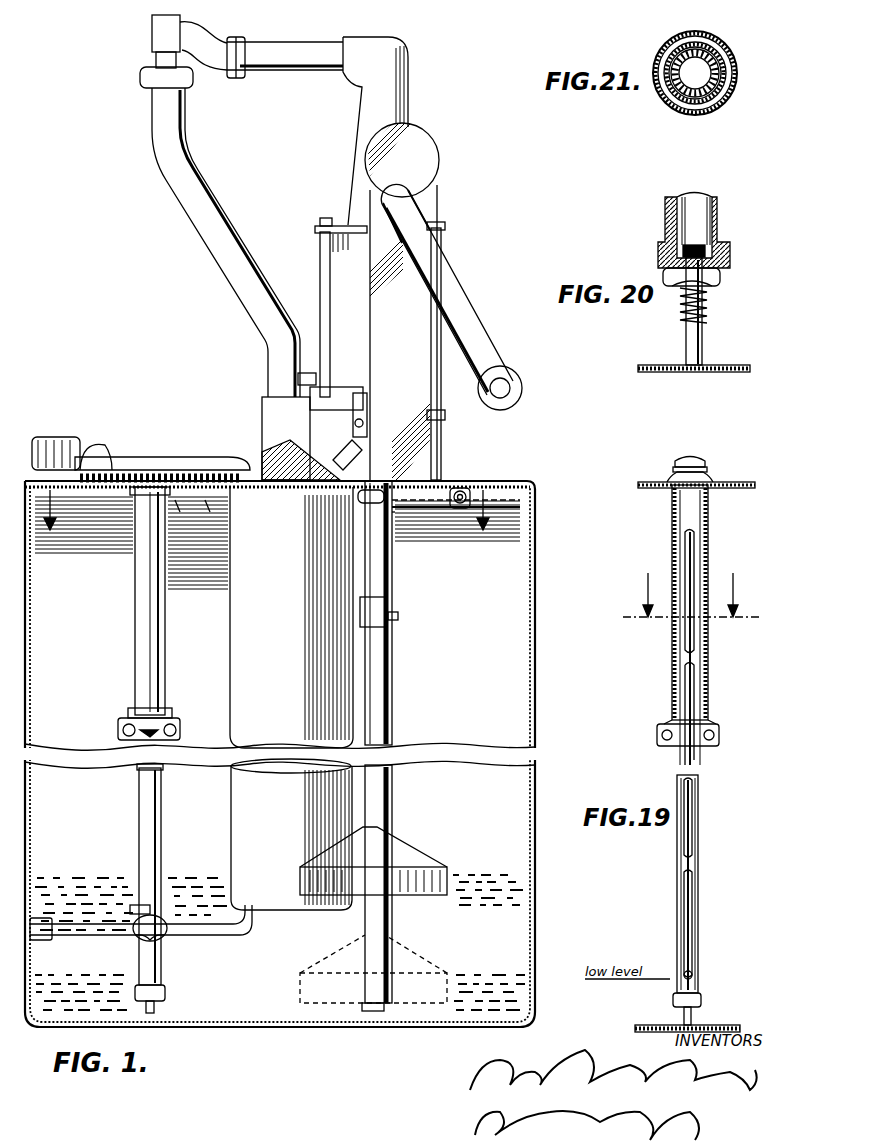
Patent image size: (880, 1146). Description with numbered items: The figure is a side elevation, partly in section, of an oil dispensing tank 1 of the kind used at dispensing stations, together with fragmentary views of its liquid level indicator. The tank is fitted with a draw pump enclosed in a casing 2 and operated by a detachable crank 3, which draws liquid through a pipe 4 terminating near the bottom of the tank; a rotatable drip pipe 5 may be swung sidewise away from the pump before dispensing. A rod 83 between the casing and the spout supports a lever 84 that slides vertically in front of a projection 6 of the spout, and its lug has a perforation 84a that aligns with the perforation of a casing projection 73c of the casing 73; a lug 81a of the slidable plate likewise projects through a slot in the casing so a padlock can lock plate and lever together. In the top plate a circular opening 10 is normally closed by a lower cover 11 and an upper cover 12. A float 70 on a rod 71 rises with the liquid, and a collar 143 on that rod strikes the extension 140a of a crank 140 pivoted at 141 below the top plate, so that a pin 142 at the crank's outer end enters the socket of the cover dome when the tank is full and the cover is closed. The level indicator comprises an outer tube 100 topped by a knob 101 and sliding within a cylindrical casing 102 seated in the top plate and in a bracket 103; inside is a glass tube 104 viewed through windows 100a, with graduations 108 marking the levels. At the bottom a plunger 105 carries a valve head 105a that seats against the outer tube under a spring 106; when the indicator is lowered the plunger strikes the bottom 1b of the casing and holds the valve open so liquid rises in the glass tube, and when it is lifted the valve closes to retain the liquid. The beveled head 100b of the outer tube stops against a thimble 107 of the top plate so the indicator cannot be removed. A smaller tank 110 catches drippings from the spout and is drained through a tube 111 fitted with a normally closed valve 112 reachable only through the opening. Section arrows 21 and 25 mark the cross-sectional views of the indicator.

In FIG. 1, the oil dispensing tank 1 is at (538, 548).
In FIG. 1, the bottom of the casing 1b is at (330, 1030).
In FIG. 20, the bottom of the casing 1b is at (641, 374).
In FIG. 19, the bottom of the casing 1b is at (720, 1025).
In FIG. 1, the casing 2 is at (350, 186).
In FIG. 1, the crank 3 is at (458, 294).
In FIG. 1, the pipe 4 is at (392, 693).
In FIG. 1, the drip pipe 5 is at (220, 200).
In FIG. 1, the projection of the spout 6 is at (297, 377).
In FIG. 1, the circular opening 10 is at (209, 516).
In FIG. 1, the lower cover 11 is at (176, 516).
In FIG. 1, the upper cover 12 is at (192, 458).
In FIG. 19, the section line 21 is at (692, 595).
In FIG. 1, the section arrows 25 is at (277, 513).
In FIG. 1, the float 70 is at (400, 852).
In FIG. 1, the rod 71 is at (392, 570).
In FIG. 1, the casing 73 is at (403, 334).
In FIG. 1, the casing projection 73c is at (365, 400).
In FIG. 1, the lug 81a is at (358, 442).
In FIG. 1, the rod 83 is at (330, 322).
In FIG. 1, the lever 84 is at (325, 397).
In FIG. 1, the perforation 84a is at (362, 414).
In FIG. 1, the tube 100 is at (140, 800).
In FIG. 21, the tube 100 is at (722, 66).
In FIG. 20, the tube 100 is at (730, 222).
In FIG. 19, the tube 100 is at (699, 820).
In FIG. 19, the windows 100a is at (709, 560).
In FIG. 20, the beveled head 100b is at (720, 272).
In FIG. 19, the beveled head 100b is at (698, 1000).
In FIG. 19, the knob 101 is at (700, 456).
In FIG. 1, the cylindrical casing 102 is at (160, 598).
In FIG. 21, the cylindrical casing 102 is at (722, 42).
In FIG. 19, the cylindrical casing 102 is at (709, 665).
In FIG. 1, the bracket 103 is at (178, 722).
In FIG. 19, the bracket 103 is at (658, 728).
In FIG. 21, the glass tube 104 is at (710, 76).
In FIG. 20, the glass tube 104 is at (712, 200).
In FIG. 19, the glass tube 104 is at (696, 900).
In FIG. 20, the plunger 105 is at (702, 340).
In FIG. 19, the plunger 105 is at (684, 1022).
In FIG. 20, the valve head 105a is at (705, 250).
In FIG. 20, the spring 106 is at (707, 302).
In FIG. 19, the thimble 107 is at (722, 486).
In FIG. 19, the graduations 108 is at (686, 976).
In FIG. 1, the smaller tank 110 is at (291, 698).
In FIG. 1, the tube 111 is at (212, 936).
In FIG. 1, the valve 112 is at (162, 940).
In FIG. 1, the crank 140 is at (455, 512).
In FIG. 1, the extension of the crank 140a is at (398, 512).
In FIG. 1, the pivot 141 is at (465, 488).
In FIG. 1, the pin 142 is at (28, 455).
In FIG. 1, the collar 143 is at (387, 600).